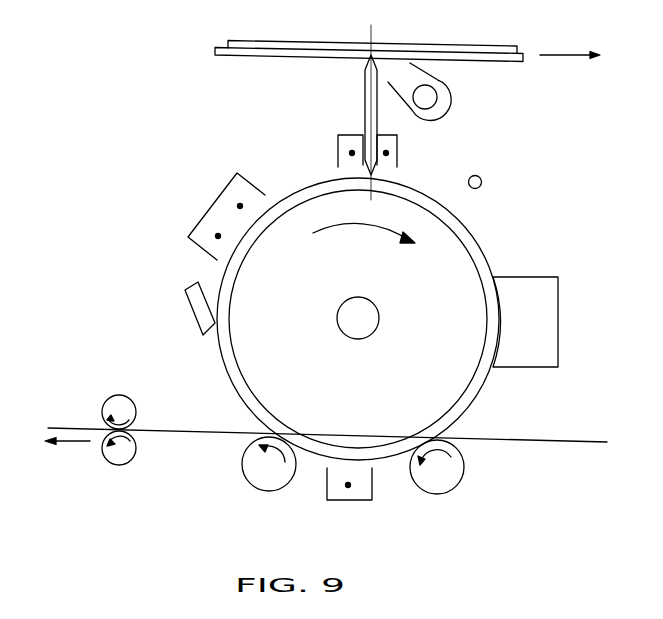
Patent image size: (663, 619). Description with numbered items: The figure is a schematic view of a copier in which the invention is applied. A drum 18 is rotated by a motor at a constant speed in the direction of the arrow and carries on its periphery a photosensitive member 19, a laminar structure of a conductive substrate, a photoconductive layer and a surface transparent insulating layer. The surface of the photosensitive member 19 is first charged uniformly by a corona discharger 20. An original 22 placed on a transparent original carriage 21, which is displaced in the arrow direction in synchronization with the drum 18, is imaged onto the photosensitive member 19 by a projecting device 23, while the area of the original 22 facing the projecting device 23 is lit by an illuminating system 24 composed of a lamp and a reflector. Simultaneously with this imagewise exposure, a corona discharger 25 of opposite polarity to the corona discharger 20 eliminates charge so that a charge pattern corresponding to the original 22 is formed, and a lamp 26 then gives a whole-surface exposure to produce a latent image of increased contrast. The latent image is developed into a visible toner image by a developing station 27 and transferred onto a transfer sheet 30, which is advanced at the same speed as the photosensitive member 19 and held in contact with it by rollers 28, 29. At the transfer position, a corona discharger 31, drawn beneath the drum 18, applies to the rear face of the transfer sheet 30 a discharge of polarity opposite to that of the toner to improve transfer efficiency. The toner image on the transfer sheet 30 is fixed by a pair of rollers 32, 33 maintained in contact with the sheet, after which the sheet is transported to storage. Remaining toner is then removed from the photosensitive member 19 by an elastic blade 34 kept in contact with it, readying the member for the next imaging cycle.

The drum 18 is at (245, 343).
The photosensitive member 19 is at (240, 395).
The corona discharger 20 is at (220, 203).
The transparent original carriage 21 is at (500, 60).
The original 22 is at (475, 43).
The projecting device 23 is at (367, 97).
The illuminating system 24 is at (448, 106).
The corona discharger 25 is at (337, 145).
The lamp 26 is at (482, 178).
The developing station 27 is at (542, 283).
The roller 28 is at (443, 490).
The roller 29 is at (260, 487).
The transfer sheet 30 is at (515, 443).
The cleaning unit 31 is at (353, 497).
The roller 32 is at (118, 465).
The roller 33 is at (122, 397).
The elastic blade 34 is at (186, 300).